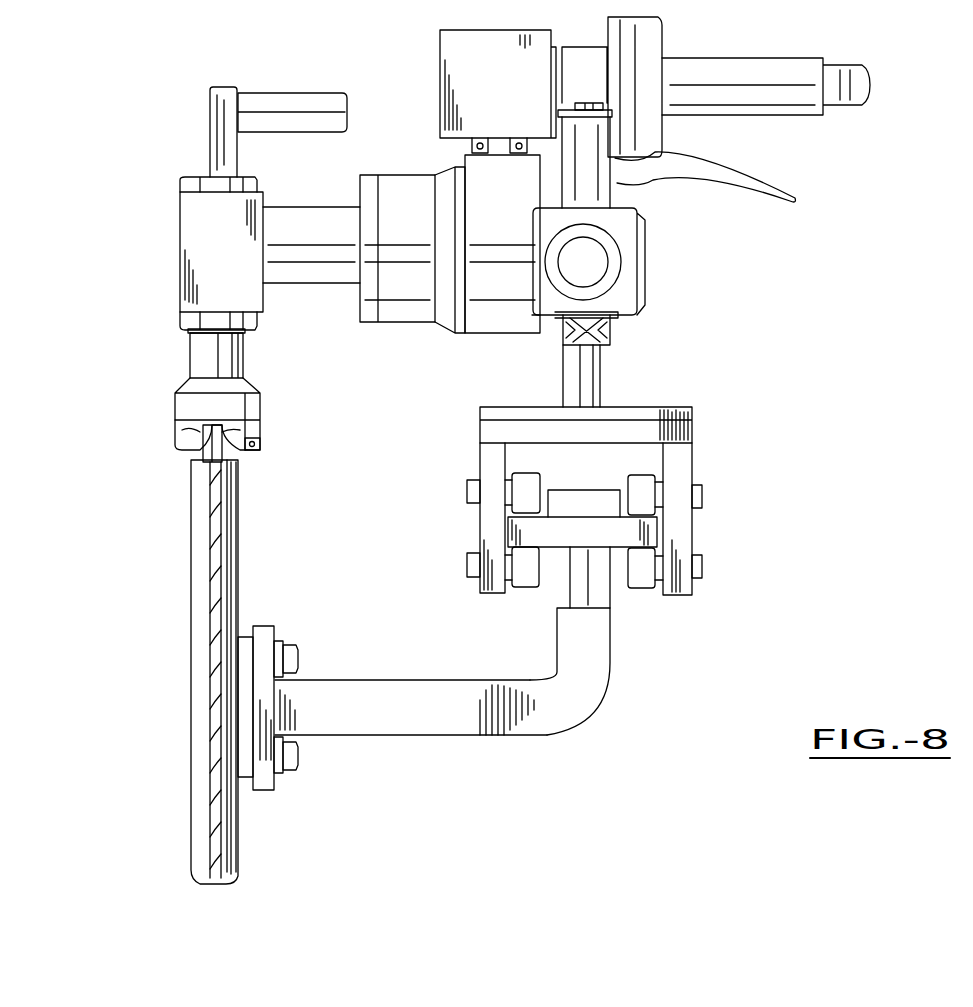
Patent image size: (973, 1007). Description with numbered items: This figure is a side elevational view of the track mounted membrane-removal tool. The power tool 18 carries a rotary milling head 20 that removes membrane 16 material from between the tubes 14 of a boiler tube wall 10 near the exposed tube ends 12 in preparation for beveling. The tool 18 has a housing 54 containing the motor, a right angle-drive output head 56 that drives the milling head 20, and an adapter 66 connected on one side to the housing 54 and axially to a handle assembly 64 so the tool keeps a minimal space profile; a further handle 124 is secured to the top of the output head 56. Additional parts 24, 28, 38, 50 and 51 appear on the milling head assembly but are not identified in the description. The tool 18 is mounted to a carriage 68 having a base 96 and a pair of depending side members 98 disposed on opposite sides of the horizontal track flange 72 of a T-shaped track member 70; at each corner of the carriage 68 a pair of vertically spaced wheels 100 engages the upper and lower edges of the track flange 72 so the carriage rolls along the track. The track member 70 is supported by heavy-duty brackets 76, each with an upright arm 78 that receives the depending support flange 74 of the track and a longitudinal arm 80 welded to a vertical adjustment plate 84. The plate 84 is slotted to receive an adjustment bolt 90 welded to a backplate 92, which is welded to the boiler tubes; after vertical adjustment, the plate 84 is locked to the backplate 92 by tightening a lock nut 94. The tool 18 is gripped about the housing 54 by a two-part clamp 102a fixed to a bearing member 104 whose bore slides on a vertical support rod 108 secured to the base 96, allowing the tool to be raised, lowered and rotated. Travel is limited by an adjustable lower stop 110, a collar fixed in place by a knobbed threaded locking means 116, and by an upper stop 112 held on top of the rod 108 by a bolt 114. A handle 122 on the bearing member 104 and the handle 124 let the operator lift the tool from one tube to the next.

The boiler tube wall 10 is at (188, 577).
The tube ends 12 is at (193, 463).
The tubes 14 is at (190, 525).
The membrane 16 is at (220, 508).
The power tool 18 is at (388, 165).
The rotary milling head 20 is at (175, 405).
The chuck body 24 is at (260, 412).
The collar 28 is at (248, 348).
The clamp screw 38 is at (262, 445).
The blade shank 50 is at (207, 432).
The washer 51 is at (197, 332).
The housing 54 is at (487, 330).
The right angle-drive output head 56 is at (182, 226).
The handle assembly 64 is at (785, 115).
The adapter 66 is at (443, 83).
The carriage 68 is at (713, 522).
The track member 70 is at (658, 532).
The track flange 72 is at (510, 527).
The support flange 74 is at (563, 590).
The brackets 76 is at (580, 727).
The upright arm 78 is at (610, 665).
The longitudinal arm 80 is at (437, 735).
The vertical adjustment plate 84 is at (268, 628).
The adjustment bolt 90 is at (302, 660).
The backplate 92 is at (242, 790).
The lock nut 94 is at (292, 643).
The base 96 is at (678, 407).
The side members 98 is at (480, 470).
The wheels 100 is at (523, 473).
The two-part clamp 102a is at (540, 338).
The bearing member 104 is at (630, 247).
The vertical support rod 108 is at (617, 188).
The adjustable lower stop 110 is at (613, 317).
The upper stop 112 is at (613, 115).
The bolt 114 is at (588, 102).
The threaded locking means 116 is at (615, 333).
The handle 122 is at (600, 265).
The handle 124 is at (262, 92).